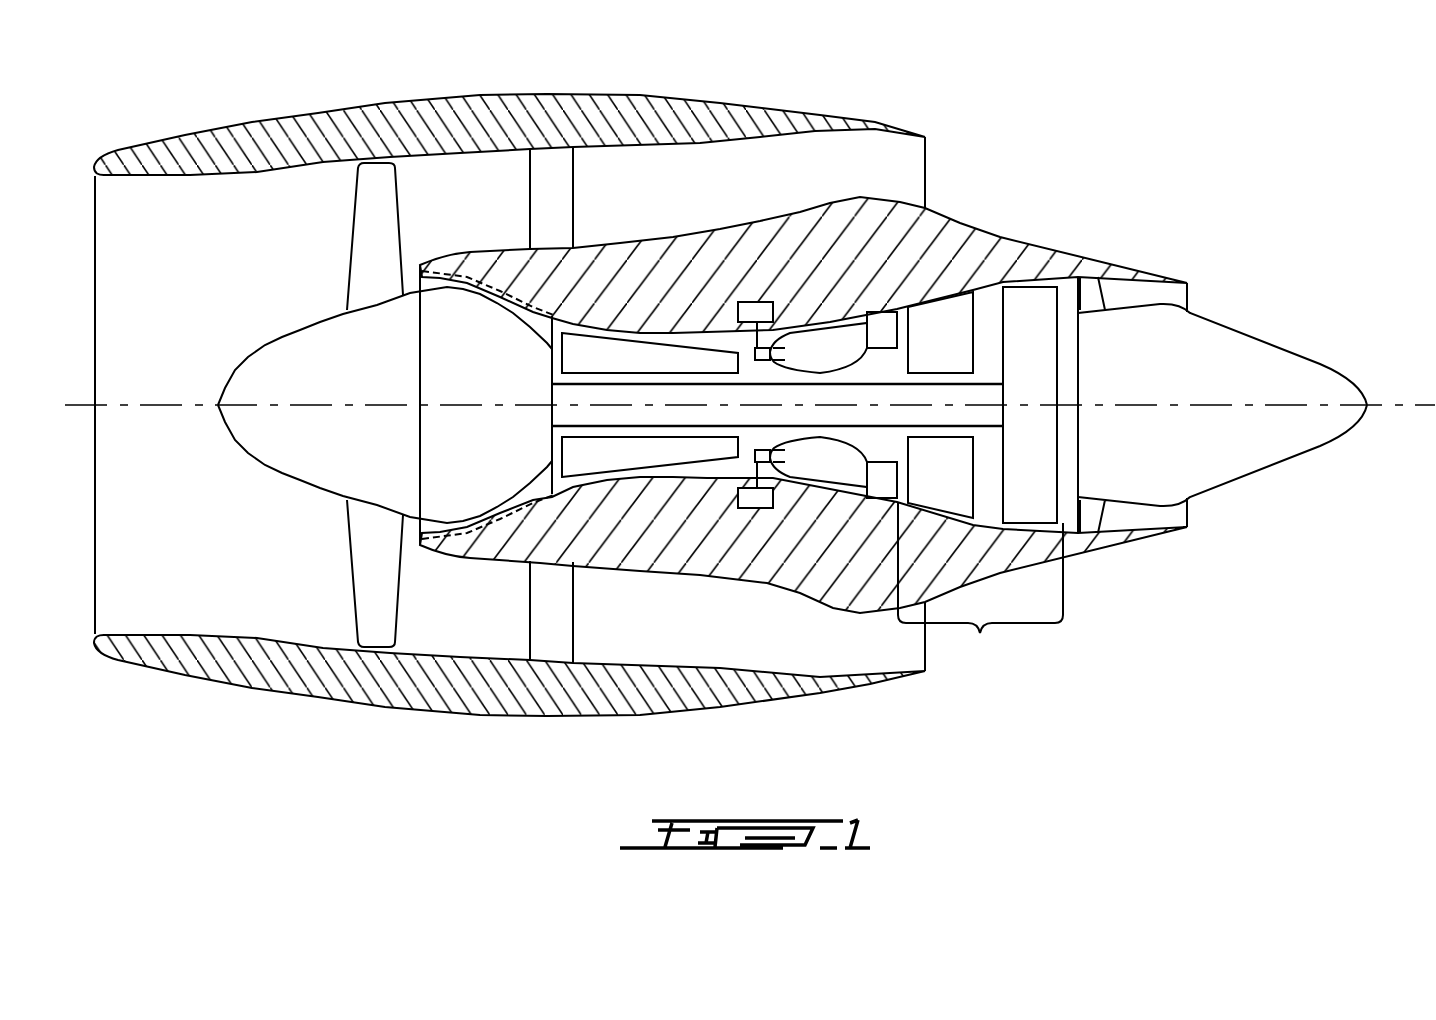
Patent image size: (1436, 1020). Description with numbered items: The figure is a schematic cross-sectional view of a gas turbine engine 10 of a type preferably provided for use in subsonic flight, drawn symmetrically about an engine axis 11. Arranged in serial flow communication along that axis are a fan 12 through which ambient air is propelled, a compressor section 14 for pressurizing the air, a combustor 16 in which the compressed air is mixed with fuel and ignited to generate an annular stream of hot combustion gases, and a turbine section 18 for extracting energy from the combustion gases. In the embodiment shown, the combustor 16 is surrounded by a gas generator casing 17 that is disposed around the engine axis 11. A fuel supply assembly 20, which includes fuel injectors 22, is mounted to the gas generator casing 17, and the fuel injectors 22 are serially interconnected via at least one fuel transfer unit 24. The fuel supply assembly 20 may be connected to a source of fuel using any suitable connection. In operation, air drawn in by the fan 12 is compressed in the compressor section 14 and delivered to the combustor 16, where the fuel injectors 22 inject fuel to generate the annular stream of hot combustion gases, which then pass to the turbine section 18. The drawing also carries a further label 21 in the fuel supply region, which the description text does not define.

The gas turbine engine 10 is at (1100, 166).
The engine axis 11 is at (1410, 405).
The fan 12 is at (370, 562).
The compressor section 14 is at (627, 352).
The combustor 16 is at (817, 352).
The gas generator casing 17 is at (855, 323).
The turbine section 18 is at (980, 635).
The fuel supply assembly 20 is at (741, 524).
The sensor unit 21 is at (758, 302).
The fuel injectors 22 is at (742, 342).
The fuel transfer unit 24 is at (763, 508).